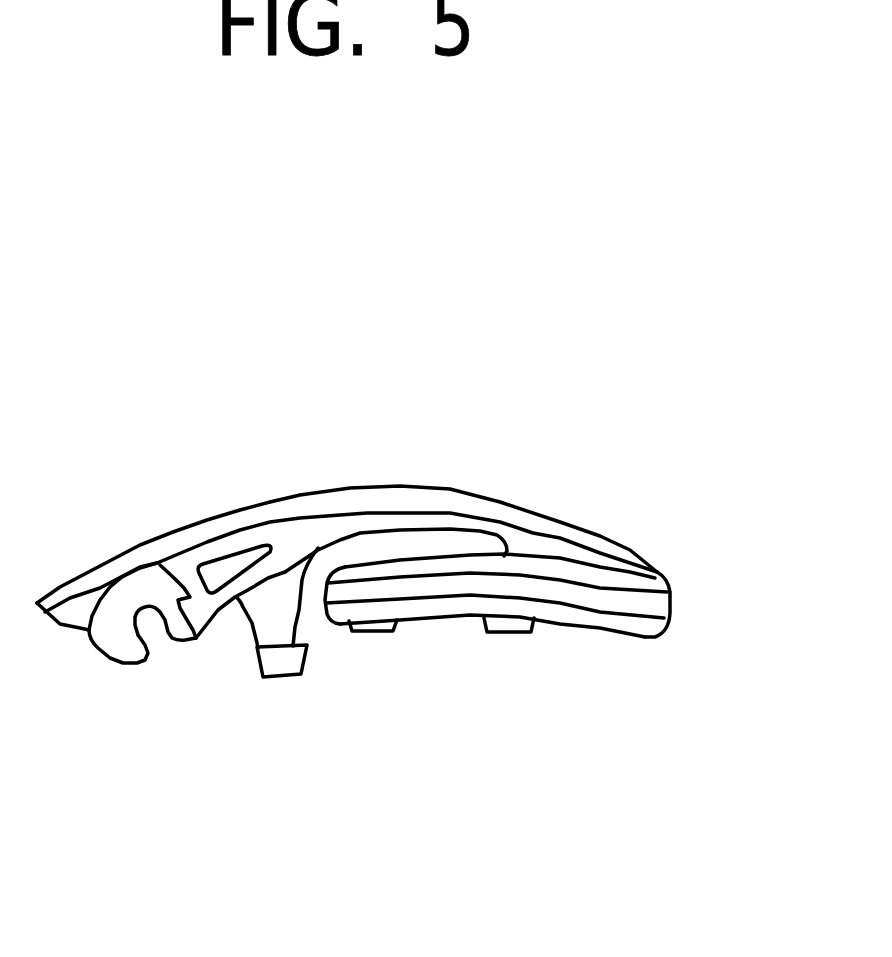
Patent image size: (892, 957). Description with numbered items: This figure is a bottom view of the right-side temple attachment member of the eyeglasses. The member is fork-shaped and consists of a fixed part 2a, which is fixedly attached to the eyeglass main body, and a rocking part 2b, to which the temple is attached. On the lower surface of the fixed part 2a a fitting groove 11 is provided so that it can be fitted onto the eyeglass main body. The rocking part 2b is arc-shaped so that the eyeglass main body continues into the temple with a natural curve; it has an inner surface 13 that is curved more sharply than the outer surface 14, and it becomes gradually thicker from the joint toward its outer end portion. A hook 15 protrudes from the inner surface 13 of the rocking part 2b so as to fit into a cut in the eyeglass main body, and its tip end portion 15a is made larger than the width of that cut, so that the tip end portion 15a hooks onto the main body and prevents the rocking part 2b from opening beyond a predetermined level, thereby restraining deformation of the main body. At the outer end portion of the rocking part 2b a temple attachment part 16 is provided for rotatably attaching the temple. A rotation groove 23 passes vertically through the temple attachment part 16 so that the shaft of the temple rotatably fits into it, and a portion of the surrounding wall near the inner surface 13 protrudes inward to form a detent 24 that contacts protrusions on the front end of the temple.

The fixed part 2a is at (573, 665).
The rocking part 2b is at (347, 640).
The fitting groove 11 is at (597, 595).
The inner surface 13 is at (218, 610).
The outer surface 14 is at (172, 530).
The hook 15 is at (318, 734).
The tip end portion 15a is at (274, 664).
The temple attachment part 16 is at (129, 755).
The rotation groove 23 is at (146, 628).
The detent 24 is at (173, 642).